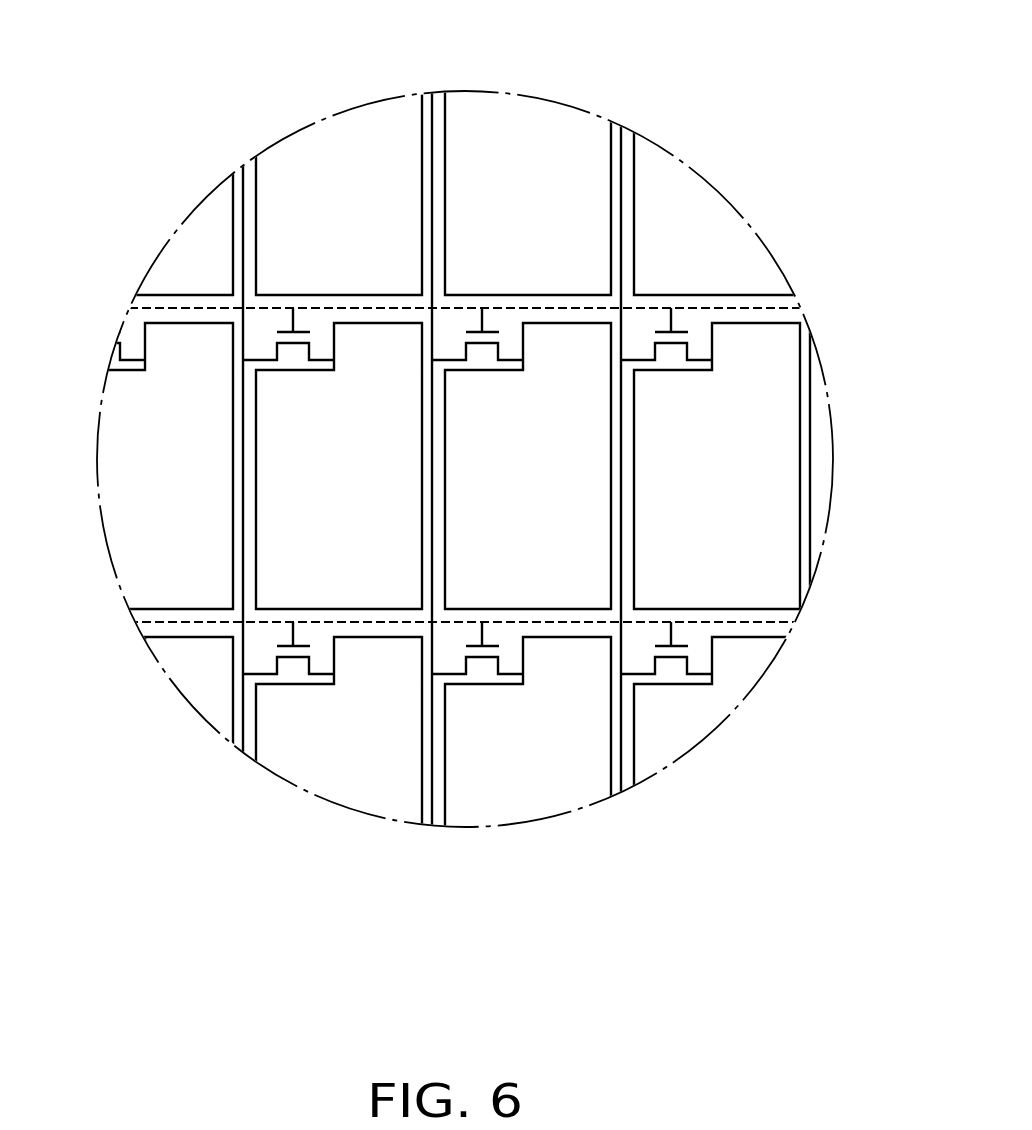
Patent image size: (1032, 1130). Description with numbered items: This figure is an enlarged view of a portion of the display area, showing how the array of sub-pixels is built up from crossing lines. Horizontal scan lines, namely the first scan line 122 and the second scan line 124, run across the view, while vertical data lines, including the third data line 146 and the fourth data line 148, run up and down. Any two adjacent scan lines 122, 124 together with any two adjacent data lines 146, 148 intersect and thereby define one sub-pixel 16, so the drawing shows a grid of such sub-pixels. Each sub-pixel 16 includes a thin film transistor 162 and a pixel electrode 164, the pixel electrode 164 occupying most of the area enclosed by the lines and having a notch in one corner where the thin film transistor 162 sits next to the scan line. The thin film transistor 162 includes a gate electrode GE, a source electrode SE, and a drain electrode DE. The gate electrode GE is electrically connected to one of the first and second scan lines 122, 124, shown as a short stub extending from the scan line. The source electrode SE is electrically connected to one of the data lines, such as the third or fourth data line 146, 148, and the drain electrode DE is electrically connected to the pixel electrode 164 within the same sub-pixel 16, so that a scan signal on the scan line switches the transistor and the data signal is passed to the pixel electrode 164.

The sub-pixel 16 is at (769, 419).
The thin film transistor 162 is at (680, 318).
The pixel electrode 164 is at (757, 365).
The third data line 146 is at (432, 160).
The fourth data line 148 is at (243, 212).
The second scan line 124 is at (185, 308).
The first scan line 122 is at (173, 622).
The gate electrode GE is at (482, 630).
The source electrode SE is at (445, 675).
The drain electrode DE is at (510, 675).